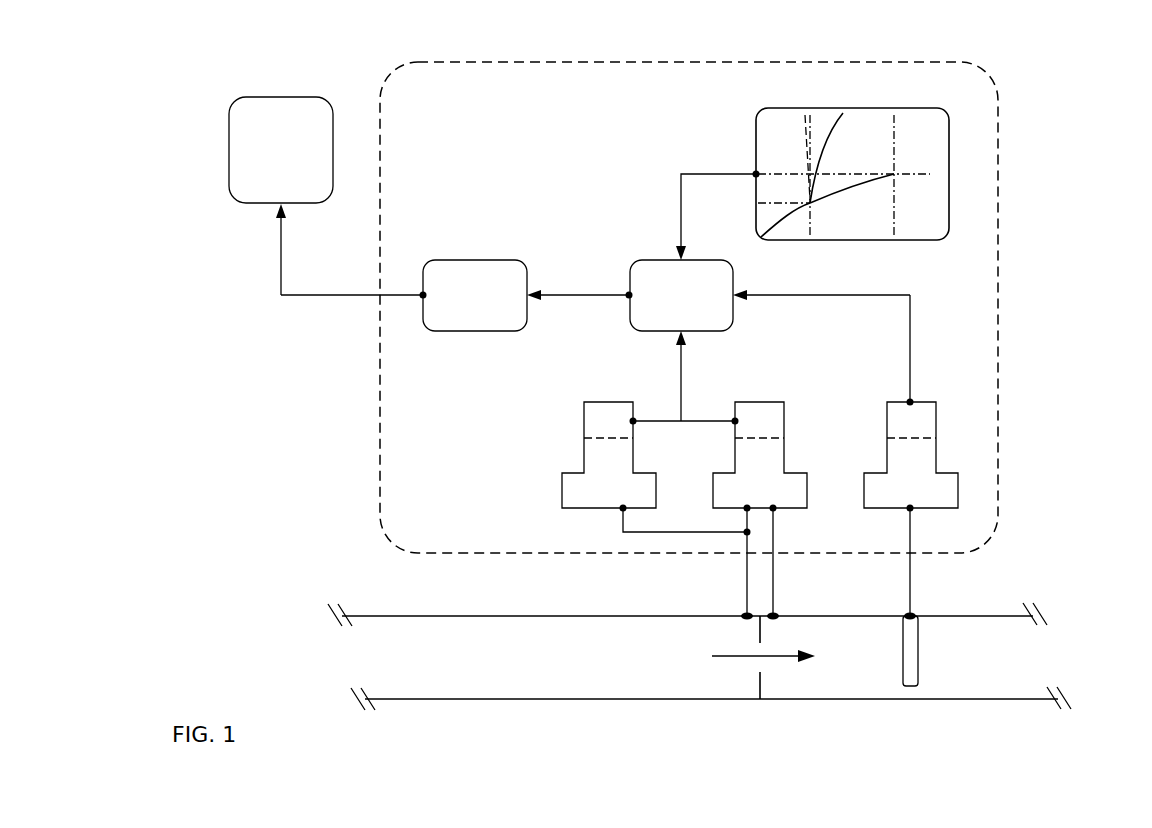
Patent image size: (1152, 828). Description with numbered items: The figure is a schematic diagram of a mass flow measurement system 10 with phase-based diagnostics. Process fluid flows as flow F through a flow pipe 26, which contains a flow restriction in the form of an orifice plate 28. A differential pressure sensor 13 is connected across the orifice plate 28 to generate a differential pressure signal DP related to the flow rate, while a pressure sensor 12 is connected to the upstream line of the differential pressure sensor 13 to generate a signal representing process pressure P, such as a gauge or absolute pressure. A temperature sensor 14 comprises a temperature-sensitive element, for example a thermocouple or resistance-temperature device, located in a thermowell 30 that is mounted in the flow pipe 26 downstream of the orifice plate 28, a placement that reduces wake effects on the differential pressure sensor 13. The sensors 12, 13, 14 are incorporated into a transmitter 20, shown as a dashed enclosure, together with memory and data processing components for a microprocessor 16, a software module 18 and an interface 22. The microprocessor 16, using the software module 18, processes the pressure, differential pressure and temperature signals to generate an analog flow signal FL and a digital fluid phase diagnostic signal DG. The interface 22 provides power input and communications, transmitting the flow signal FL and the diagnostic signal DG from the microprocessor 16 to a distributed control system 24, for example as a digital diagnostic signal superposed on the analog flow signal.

The mass flow measurement system 10 is at (1076, 96).
The pressure sensor 12 is at (598, 402).
The differential pressure sensor 13 is at (765, 402).
The temperature sensor 14 is at (918, 402).
The microprocessor 16 is at (660, 260).
The software module 18 is at (756, 130).
The transmitter 20 is at (969, 62).
The interface 22 is at (502, 260).
The distributed control system 24 is at (259, 97).
The flow pipe 26 is at (420, 616).
The orifice plate 28 is at (742, 686).
The thermowell 30 is at (918, 671).